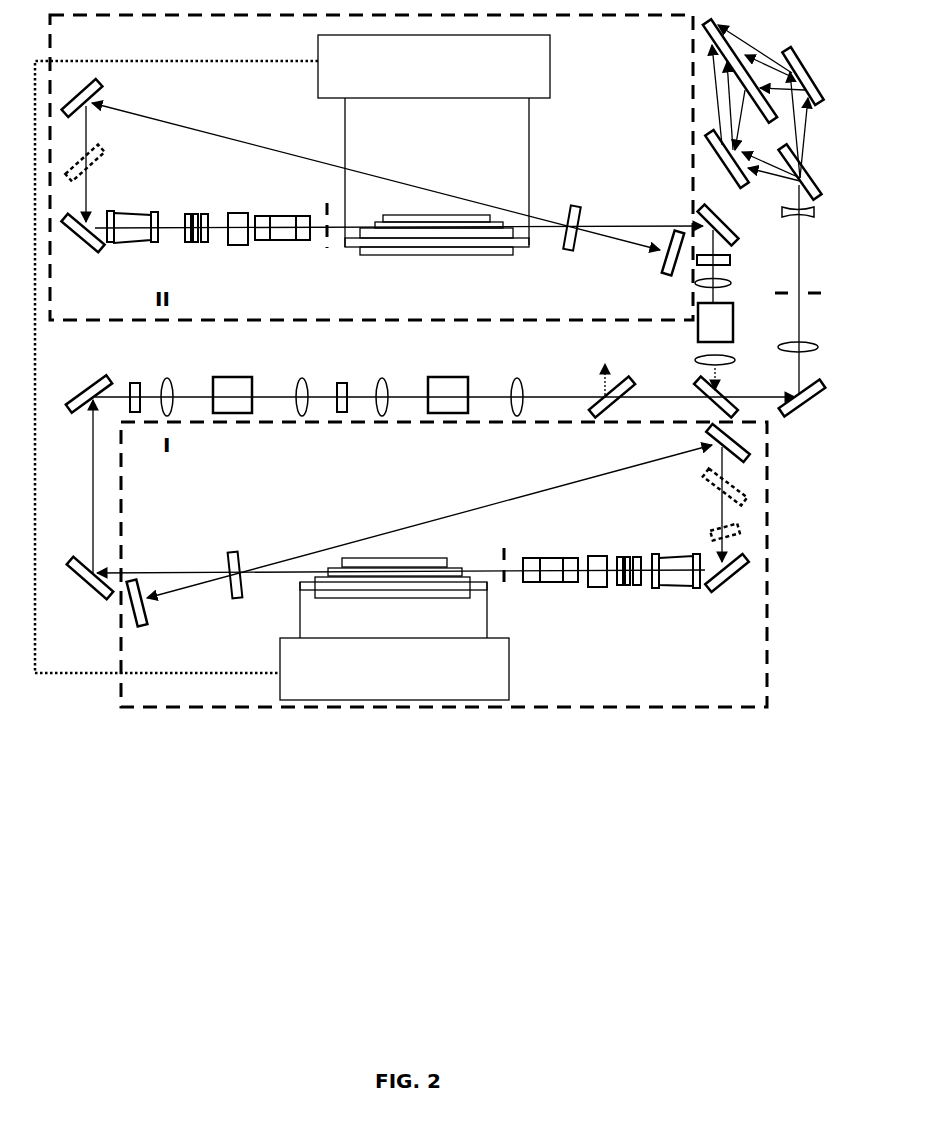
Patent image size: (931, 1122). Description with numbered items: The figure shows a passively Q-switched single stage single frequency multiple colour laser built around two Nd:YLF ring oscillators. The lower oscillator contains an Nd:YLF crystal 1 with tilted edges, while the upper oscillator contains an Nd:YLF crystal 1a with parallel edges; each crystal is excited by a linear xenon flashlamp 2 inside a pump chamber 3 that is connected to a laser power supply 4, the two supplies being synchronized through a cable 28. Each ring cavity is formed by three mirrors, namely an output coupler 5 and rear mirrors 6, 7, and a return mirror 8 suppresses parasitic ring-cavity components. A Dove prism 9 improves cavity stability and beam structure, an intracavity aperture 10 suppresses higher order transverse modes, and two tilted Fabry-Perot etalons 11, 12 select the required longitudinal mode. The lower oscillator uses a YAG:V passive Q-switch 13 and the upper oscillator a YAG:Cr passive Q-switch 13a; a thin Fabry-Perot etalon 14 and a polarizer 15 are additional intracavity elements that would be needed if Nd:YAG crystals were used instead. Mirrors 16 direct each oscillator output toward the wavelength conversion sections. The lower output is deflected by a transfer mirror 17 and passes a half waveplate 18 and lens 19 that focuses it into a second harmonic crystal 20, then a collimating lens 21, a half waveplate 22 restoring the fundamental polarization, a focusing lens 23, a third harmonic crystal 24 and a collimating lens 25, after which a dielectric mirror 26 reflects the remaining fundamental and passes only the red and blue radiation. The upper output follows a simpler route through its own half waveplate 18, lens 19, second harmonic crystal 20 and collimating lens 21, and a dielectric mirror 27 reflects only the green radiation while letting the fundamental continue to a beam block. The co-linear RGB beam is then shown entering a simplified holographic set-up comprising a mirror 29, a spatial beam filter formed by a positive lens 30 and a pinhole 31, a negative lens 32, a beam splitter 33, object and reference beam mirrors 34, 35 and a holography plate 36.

The Nd:YLF crystal 1 is at (455, 566).
The Nd:YLF crystal 1a is at (376, 224).
The linear xenon flashlamp 2 is at (520, 243).
The pump chamber 3 is at (415, 399).
The laser power supply 4 is at (415, 367).
The output coupler 5 is at (408, 388).
The rear mirror 6 is at (407, 277).
The rear mirror 7 is at (404, 406).
The return mirror 8 is at (406, 440).
The Dove prism 9 is at (416, 383).
The intracavity aperture 10 is at (417, 385).
The tilted Fabry-Perot etalon 11 is at (403, 386).
The tilted Fabry-Perot etalon 12 is at (415, 384).
The YAG:V3+ passive Q-switch 13 is at (598, 557).
The YAG:Cr passive Q-switch 13a is at (241, 214).
The thin Fabry-Perot etalon 14 is at (737, 533).
The polarizer 15 is at (415, 329).
The mirror 16 is at (410, 405).
The transfer mirror 17 is at (89, 383).
The half waveplate 18 is at (444, 329).
The lens 19 is at (460, 343).
The second harmonic crystal 20 is at (473, 358).
The collimating lens 21 is at (530, 381).
The half waveplate 22 is at (342, 381).
The focusing lens 23 is at (383, 383).
The third harmonic crystal 24 is at (448, 395).
The collimating lens 25 is at (517, 382).
The dielectric mirror 26 is at (616, 382).
The dielectric mirror 27 is at (704, 394).
The cable 28 is at (176, 353).
The mirror 29 is at (802, 410).
The positive lens 30 is at (804, 333).
The pinhole 31 is at (803, 278).
The negative lens 32 is at (787, 210).
The beam splitter 33 is at (805, 172).
The object beam mirror 34 is at (809, 75).
The reference beam mirror 35 is at (719, 159).
The holography plate 36 is at (740, 64).